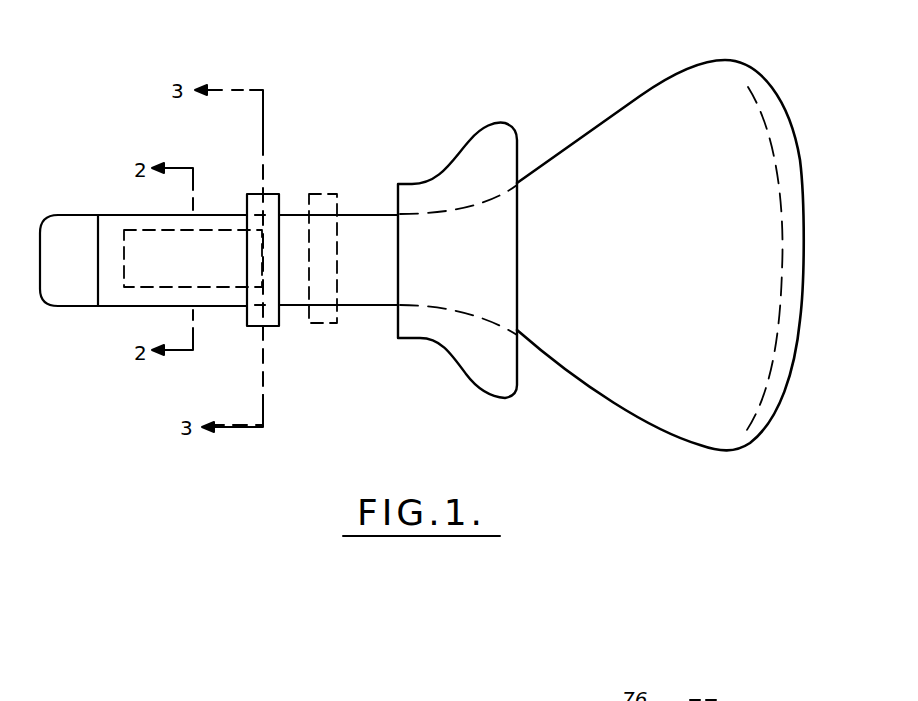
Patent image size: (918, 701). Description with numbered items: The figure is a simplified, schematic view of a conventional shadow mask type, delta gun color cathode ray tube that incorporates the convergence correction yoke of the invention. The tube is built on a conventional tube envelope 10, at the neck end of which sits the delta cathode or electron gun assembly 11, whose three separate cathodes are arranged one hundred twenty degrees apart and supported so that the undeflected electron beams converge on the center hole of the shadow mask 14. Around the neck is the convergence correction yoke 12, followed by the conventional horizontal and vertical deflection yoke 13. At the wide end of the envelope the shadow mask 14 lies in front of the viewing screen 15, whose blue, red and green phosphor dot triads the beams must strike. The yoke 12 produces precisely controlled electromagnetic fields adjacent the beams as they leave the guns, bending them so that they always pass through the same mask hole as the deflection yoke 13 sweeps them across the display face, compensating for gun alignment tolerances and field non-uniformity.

The tube envelope 10 is at (676, 243).
The electron gun assembly 11 is at (140, 290).
The convergence correction yoke 12 is at (279, 193).
The horizontal and vertical deflection yoke 13 is at (482, 125).
The shadow mask 14 is at (748, 88).
The viewing screen 15 is at (797, 150).